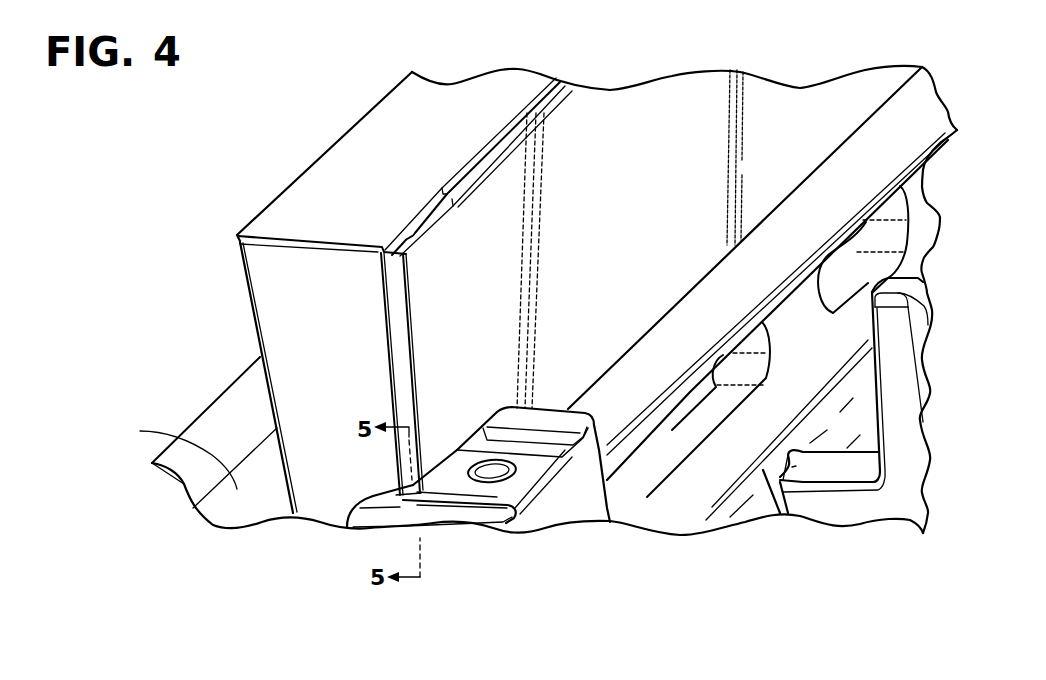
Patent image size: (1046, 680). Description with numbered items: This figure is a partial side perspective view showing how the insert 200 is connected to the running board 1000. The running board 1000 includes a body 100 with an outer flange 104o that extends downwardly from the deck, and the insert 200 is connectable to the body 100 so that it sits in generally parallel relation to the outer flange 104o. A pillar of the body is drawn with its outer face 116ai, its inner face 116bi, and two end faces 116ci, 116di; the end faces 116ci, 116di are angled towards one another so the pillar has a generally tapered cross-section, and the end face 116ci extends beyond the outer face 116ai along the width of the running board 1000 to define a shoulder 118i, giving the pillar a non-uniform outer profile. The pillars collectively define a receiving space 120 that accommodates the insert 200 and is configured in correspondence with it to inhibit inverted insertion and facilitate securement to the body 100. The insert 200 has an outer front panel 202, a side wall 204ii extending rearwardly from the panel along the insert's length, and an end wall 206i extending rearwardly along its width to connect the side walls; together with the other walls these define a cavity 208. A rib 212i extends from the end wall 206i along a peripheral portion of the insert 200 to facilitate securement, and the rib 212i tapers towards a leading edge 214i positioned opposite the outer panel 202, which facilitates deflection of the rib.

The insert 200 is at (364, 104).
The outer (front) panel 202 is at (288, 189).
The side wall 204ii is at (470, 97).
The cavity 208 is at (592, 128).
The end wall 206i is at (290, 292).
The rib 212i is at (397, 302).
The leading edge 214i is at (415, 357).
The body 100 is at (238, 381).
The outer flange 104o is at (231, 431).
The receiving space 120 is at (169, 454).
The running board 1000 is at (174, 494).
The shoulder 118i is at (393, 500).
The outer face 116ai is at (480, 430).
The inner face 116bi is at (563, 510).
The end face 116ci is at (370, 523).
The end face 116di is at (542, 410).